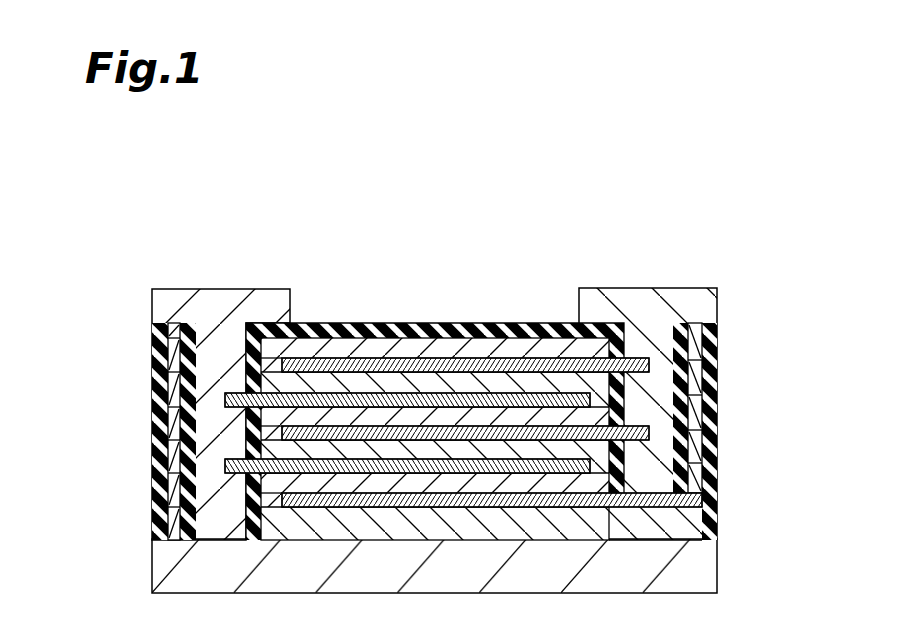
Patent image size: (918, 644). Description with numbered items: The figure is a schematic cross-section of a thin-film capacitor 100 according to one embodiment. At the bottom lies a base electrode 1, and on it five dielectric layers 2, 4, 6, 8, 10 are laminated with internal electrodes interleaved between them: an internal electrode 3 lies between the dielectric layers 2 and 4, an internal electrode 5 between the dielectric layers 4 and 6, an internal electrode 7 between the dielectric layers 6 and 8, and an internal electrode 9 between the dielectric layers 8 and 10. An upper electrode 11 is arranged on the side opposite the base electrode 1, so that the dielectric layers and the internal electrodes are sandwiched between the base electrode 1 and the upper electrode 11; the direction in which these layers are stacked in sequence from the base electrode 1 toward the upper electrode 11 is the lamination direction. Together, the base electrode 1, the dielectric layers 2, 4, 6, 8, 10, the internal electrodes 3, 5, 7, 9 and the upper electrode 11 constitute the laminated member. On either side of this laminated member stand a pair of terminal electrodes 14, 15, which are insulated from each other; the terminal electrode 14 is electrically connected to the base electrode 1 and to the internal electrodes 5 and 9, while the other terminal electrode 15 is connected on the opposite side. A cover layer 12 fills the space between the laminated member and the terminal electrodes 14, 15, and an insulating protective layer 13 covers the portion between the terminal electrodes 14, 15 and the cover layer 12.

The thin-film capacitor 100 is at (703, 177).
The base electrode 1 is at (695, 563).
The dielectric layer 2 is at (695, 523).
The internal electrode 3 is at (650, 500).
The dielectric layer 4 is at (694, 488).
The internal electrode 5 is at (592, 466).
The dielectric layer 6 is at (694, 453).
The internal electrode 7 is at (650, 431).
The dielectric layer 8 is at (694, 418).
The internal electrode 9 is at (592, 398).
The dielectric layer 10 is at (694, 383).
The upper electrode 11 is at (649, 362).
The cover layer 12 is at (694, 345).
The insulating protective layer 13 is at (445, 323).
The terminal electrode 14 is at (272, 305).
The terminal electrode 15 is at (693, 303).